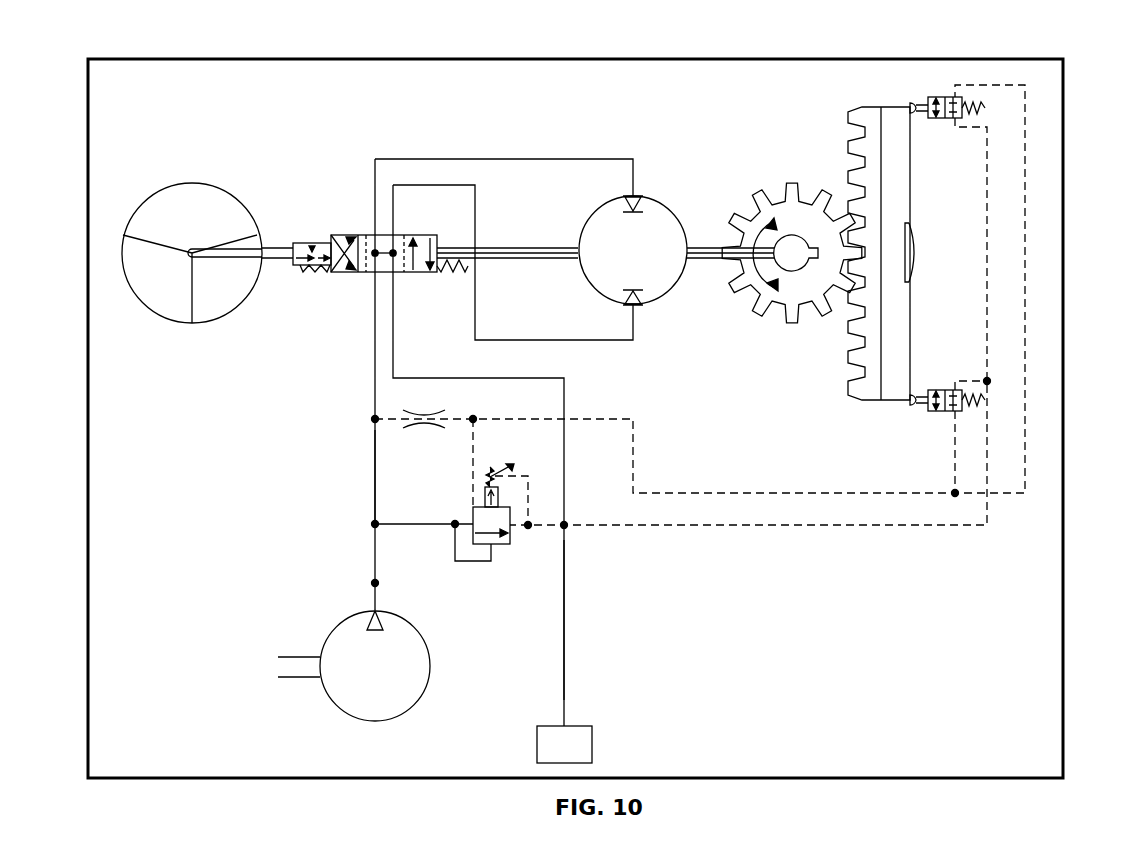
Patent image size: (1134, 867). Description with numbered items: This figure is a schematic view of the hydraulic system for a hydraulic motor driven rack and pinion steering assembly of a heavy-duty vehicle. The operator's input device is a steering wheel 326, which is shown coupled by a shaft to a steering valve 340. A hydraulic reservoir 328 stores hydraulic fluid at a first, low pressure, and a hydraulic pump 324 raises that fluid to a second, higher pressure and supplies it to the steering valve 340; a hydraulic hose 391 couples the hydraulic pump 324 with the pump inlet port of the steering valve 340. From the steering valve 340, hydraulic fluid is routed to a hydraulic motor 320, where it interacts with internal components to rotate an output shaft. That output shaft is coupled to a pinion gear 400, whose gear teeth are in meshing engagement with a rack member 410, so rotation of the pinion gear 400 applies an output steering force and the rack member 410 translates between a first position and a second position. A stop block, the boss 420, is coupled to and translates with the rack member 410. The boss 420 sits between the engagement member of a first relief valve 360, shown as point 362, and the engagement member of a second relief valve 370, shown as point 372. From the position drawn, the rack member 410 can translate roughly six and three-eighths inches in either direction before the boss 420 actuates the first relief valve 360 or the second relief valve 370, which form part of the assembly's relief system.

The steering wheel 326 is at (162, 190).
The steering valve 340 is at (418, 235).
The hydraulic motor 320 is at (590, 214).
The pinion gear 400 is at (792, 183).
The rack member 410 is at (897, 107).
The point 362 is at (914, 103).
The first relief valve 360 is at (954, 97).
The boss 420 is at (916, 252).
The point 372 is at (913, 406).
The second relief valve 370 is at (949, 411).
The hydraulic hose 391 is at (375, 474).
The hydraulic pump 324 is at (428, 652).
The hydraulic reservoir 328 is at (592, 745).